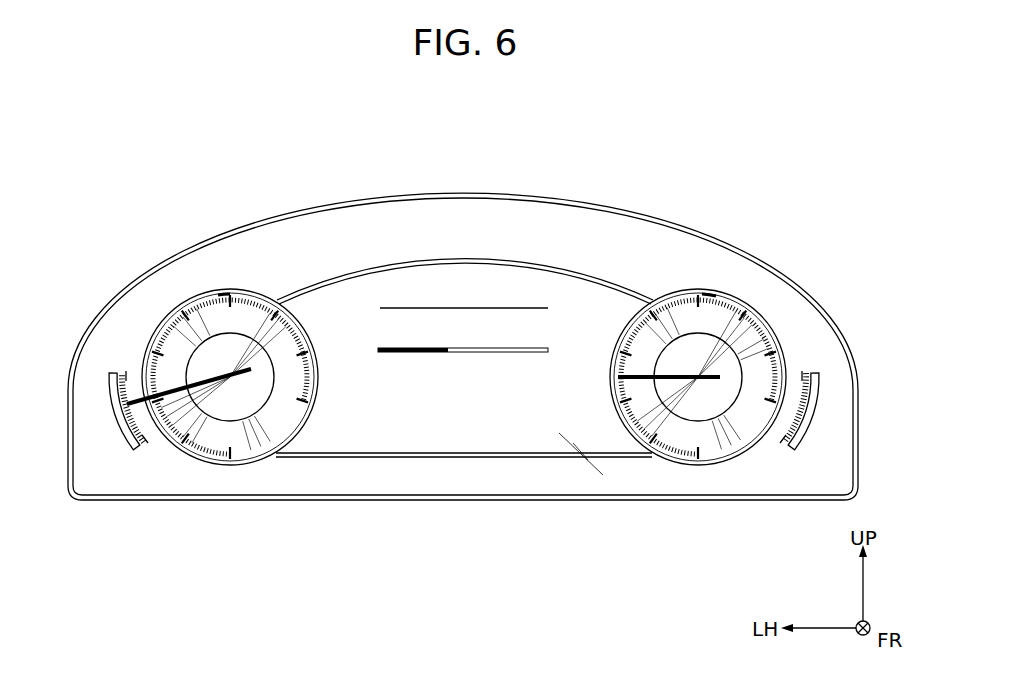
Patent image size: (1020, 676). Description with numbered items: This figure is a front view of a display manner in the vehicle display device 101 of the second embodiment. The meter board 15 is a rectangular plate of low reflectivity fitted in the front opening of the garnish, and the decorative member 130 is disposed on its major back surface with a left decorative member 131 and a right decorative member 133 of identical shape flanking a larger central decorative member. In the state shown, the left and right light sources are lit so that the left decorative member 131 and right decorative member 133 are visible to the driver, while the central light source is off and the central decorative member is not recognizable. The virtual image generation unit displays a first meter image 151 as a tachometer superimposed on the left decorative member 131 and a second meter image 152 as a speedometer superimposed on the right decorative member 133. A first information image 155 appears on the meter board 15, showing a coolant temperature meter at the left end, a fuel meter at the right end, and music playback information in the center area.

The display device 101 is at (102, 150).
The meter board 15 is at (375, 240).
The decorative member 130 is at (457, 303).
The left decorative member 131 is at (230, 294).
The right decorative member 133 is at (680, 290).
The first meter image 151 is at (207, 298).
The second meter image 152 is at (722, 296).
The first information image 155 is at (486, 246).